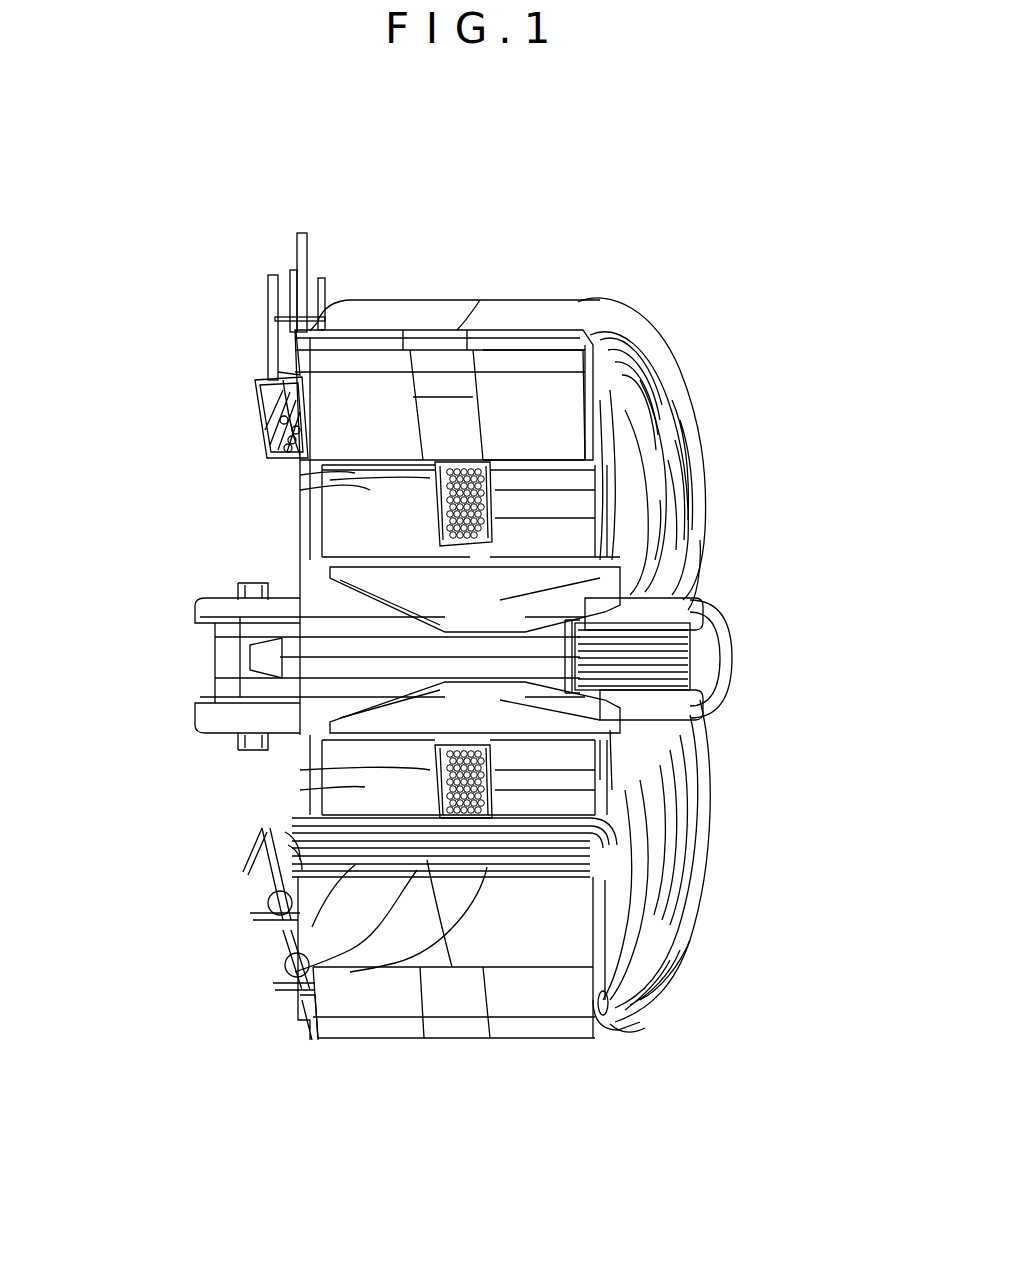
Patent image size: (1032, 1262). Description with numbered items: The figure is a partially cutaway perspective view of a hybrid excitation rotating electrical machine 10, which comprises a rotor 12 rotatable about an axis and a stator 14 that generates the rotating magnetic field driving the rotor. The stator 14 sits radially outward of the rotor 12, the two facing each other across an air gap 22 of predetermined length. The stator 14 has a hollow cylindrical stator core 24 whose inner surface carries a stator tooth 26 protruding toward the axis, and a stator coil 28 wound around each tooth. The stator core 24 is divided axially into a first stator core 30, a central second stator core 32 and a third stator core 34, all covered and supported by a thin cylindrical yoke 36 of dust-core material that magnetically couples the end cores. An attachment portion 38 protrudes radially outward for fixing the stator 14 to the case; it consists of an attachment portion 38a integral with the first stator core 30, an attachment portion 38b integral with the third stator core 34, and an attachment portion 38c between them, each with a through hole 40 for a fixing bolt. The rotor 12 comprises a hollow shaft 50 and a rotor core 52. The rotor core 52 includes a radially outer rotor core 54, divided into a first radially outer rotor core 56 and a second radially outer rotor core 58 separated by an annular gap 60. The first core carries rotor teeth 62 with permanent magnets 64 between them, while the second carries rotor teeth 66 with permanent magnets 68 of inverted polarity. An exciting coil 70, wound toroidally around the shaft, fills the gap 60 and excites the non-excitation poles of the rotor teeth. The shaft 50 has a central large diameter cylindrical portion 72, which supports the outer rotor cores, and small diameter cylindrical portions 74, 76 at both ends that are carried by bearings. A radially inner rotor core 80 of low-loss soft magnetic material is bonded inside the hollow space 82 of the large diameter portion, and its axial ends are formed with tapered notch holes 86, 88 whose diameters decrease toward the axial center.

The hybrid excitation rotating electrical machine 10 is at (566, 258).
The rotor 12 is at (763, 645).
The stator 14 is at (235, 421).
The air gap 22 is at (380, 458).
The stator core 24 is at (122, 905).
The stator tooth 26 is at (513, 407).
The stator coil 28 is at (655, 410).
The first stator core 30 is at (412, 870).
The second stator core 32 is at (480, 870).
The third stator core 34 is at (510, 862).
The yoke 36 is at (615, 1008).
The attachment portion 38 is at (340, 1100).
The attachment portion 38a is at (368, 1003).
The attachment portion 38b is at (537, 1003).
The attachment portion 38c is at (453, 1003).
The through hole 40 is at (625, 1022).
The shaft 50 is at (162, 659).
The rotor core 52 is at (120, 480).
The radially outer rotor core 54 is at (180, 470).
The first radially outer rotor core 56 is at (312, 487).
The second radially outer rotor core 58 is at (535, 545).
The annular gap 60 is at (420, 780).
The rotor tooth 62 is at (353, 487).
The permanent magnet 64 is at (360, 800).
The rotor tooth 66 is at (540, 797).
The permanent magnet 68 is at (555, 482).
The exciting coil 70 is at (570, 760).
The large diameter cylindrical portion 72 is at (380, 742).
The small diameter cylindrical portion 74 is at (220, 690).
The small diameter cylindrical portion 76 is at (690, 690).
The radially inner rotor core 80 is at (415, 592).
The hollow space 82 is at (405, 632).
The notch hole 86 is at (325, 615).
The notch hole 88 is at (575, 592).